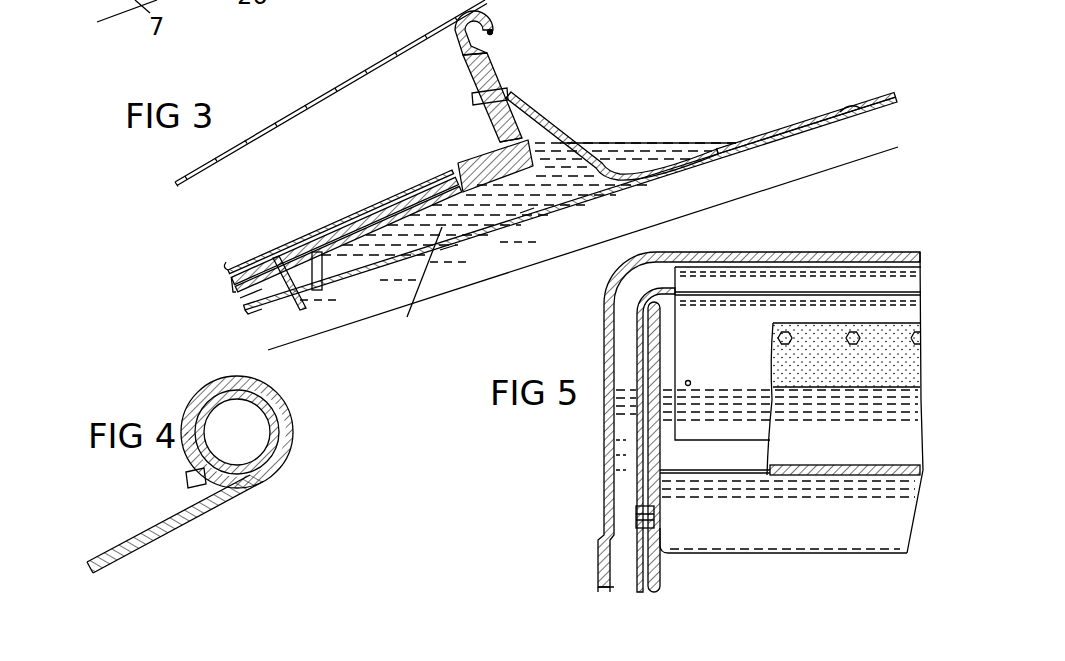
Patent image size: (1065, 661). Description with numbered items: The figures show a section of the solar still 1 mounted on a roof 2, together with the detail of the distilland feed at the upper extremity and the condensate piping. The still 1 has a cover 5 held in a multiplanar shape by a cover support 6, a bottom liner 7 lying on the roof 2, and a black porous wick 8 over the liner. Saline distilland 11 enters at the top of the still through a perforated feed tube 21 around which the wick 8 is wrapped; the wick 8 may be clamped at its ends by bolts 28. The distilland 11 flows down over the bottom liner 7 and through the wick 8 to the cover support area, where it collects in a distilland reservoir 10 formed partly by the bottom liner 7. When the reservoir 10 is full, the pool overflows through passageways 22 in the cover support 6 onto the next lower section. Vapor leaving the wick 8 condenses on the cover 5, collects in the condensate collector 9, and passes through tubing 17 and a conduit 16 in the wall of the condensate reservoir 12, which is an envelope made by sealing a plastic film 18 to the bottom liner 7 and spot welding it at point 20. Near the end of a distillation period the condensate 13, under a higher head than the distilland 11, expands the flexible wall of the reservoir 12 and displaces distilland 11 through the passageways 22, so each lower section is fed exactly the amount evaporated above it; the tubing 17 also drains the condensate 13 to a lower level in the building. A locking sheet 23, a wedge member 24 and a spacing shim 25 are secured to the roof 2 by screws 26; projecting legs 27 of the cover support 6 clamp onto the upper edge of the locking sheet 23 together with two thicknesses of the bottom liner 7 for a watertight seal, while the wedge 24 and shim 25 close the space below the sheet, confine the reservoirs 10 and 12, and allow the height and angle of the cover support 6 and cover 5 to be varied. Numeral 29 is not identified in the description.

In FIG. 3, the still 1 is at (247, 205).
In FIG. 3, the roof 2 is at (835, 166).
In FIG. 3, the cover 5 is at (338, 85).
In FIG. 5, the cover 5 is at (603, 310).
In FIG. 3, the cover support 6 is at (488, 78).
In FIG. 5, the cover support 6 is at (756, 262).
In FIG. 3, the bottom liner 7 is at (350, 228).
In FIG. 5, the bottom liner 7 is at (657, 433).
In FIG. 3, the black porous wick 8 is at (387, 197).
In FIG. 4, the black porous wick 8 is at (248, 493).
In FIG. 5, the black porous wick 8 is at (830, 376).
In FIG. 3, the condensate collector 9 is at (495, 28).
In FIG. 5, the condensate collector 9 is at (805, 262).
In FIG. 3, the reservoir for distilland 10 is at (550, 140).
In FIG. 5, the reservoir for distilland 10 is at (727, 468).
In FIG. 3, the distilland 11 is at (638, 142).
In FIG. 3, the reservoir for condensed distillate 12 is at (495, 228).
In FIG. 5, the reservoir for condensed distillate 12 is at (764, 551).
In FIG. 3, the condensed distillate 13 is at (527, 208).
In FIG. 5, the conduit 16 is at (636, 515).
In FIG. 5, the tubing 17 is at (650, 420).
In FIG. 3, the plastic film 18 is at (448, 247).
In FIG. 5, the plastic film 18 is at (866, 557).
In FIG. 3, the spot weld point 20 is at (848, 108).
In FIG. 4, the perforated feed tube 21 is at (255, 443).
In FIG. 3, the passageways 22 is at (500, 140).
In FIG. 5, the passageways 22 is at (688, 380).
In FIG. 3, the locking sheet 23 is at (250, 273).
In FIG. 3, the wedge member 24 is at (240, 298).
In FIG. 3, the spacing shim 25 is at (250, 310).
In FIG. 3, the screws 26 is at (305, 308).
In FIG. 3, the projecting legs 27 is at (472, 163).
In FIG. 3, the bolts 28 is at (503, 89).
In FIG. 5, the bolts 28 is at (854, 330).
In FIG. 4, the tab 29 is at (267, 480).